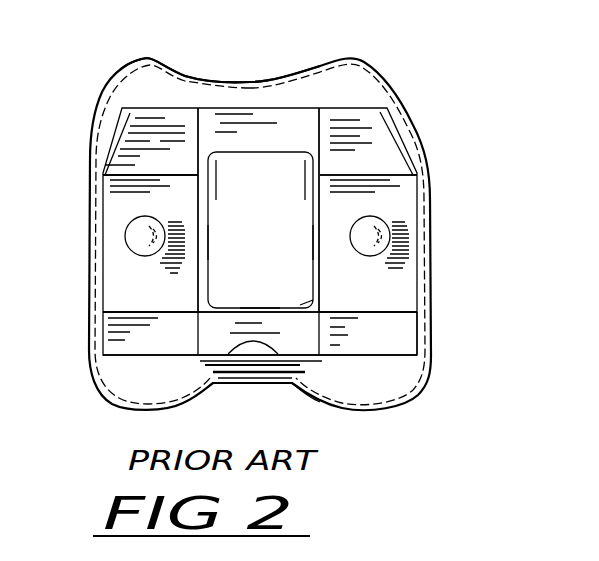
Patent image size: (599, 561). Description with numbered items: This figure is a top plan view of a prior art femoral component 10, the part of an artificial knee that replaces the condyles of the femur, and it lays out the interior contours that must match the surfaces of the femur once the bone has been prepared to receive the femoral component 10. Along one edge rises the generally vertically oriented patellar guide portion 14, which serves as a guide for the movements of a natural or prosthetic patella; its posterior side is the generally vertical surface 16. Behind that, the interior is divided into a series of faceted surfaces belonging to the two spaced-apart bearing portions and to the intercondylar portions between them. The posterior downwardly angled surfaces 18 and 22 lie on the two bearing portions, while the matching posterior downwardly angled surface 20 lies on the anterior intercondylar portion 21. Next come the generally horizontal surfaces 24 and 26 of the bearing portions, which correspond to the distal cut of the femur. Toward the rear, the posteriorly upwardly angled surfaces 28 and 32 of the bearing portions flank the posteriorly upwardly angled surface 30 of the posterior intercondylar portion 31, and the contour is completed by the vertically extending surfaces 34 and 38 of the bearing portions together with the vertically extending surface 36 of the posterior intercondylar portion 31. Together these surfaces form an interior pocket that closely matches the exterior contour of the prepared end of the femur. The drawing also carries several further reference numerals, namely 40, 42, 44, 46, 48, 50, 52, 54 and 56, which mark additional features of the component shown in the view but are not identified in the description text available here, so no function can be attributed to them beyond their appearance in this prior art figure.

The femoral component 10 is at (424, 81).
The patellar guide portion 14 is at (253, 80).
The generally vertical surface 16 is at (156, 107).
The posterior downwardly angled surface 18 is at (140, 162).
The posterior downwardly angled surface 20 is at (285, 151).
The anterior intercondylar portion 21 is at (231, 180).
The posterior downwardly angled surface 22 is at (377, 148).
The generally horizontal surface 24 is at (160, 212).
The generally horizontal surface 26 is at (378, 212).
The posteriorly upwardly angled surface 28 is at (176, 349).
The posteriorly upwardly angled surface 30 is at (318, 337).
The posterior intercondylar portion 31 is at (304, 297).
The posteriorly upwardly angled surface 32 is at (394, 347).
The vertically extending surface 34 is at (130, 313).
The vertically extending surface 36 is at (278, 354).
The vertically extending surface 38 is at (388, 352).
The left hump of housing 40 is at (167, 67).
The rounded central pad 42 is at (238, 230).
The left edge of pad 44 is at (209, 241).
The right edge of pad 46 is at (313, 242).
The right portion of pad 48 is at (287, 180).
The lower edge of pad 50 is at (262, 308).
The left button 52 is at (125, 233).
The right button 54 is at (390, 237).
The central notch 56 is at (302, 383).